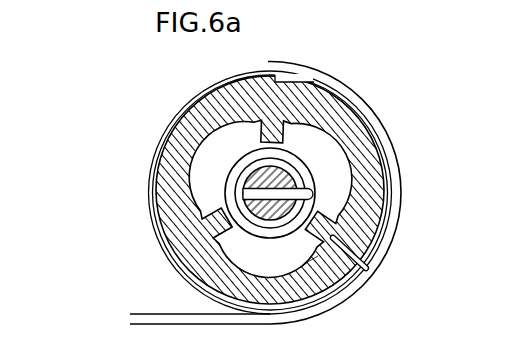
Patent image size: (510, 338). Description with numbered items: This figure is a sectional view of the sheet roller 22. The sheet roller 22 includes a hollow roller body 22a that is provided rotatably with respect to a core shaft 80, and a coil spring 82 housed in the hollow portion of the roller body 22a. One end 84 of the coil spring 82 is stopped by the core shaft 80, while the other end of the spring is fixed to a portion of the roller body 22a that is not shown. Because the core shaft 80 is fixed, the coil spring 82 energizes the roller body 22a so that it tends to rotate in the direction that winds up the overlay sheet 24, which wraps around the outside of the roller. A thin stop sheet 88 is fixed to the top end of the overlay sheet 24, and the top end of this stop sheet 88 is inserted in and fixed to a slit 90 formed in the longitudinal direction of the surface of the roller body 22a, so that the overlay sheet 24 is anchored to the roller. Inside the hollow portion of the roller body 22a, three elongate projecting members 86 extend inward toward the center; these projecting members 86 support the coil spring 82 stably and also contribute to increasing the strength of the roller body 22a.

The sheet roller 22 is at (325, 53).
The hollow roller body 22a is at (368, 139).
The overlay sheet 24 is at (356, 92).
The core shaft 80 is at (272, 220).
The coil spring 82 is at (308, 153).
The end of the coil spring 84 is at (312, 191).
The elongate projecting members 86 is at (261, 131).
The thin stop sheet 88 is at (372, 272).
The slit 90 is at (325, 249).